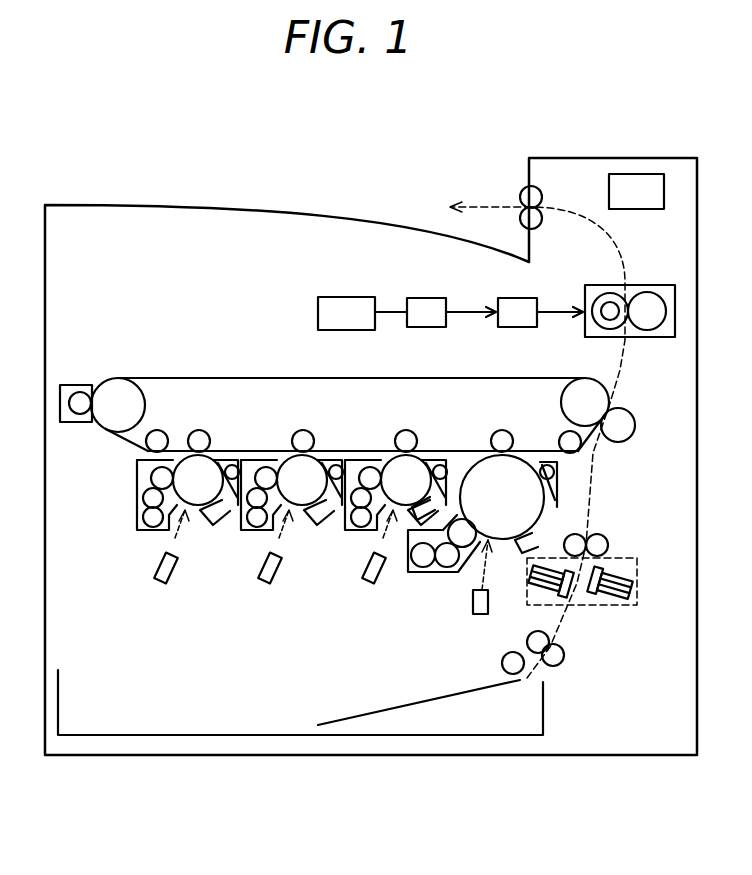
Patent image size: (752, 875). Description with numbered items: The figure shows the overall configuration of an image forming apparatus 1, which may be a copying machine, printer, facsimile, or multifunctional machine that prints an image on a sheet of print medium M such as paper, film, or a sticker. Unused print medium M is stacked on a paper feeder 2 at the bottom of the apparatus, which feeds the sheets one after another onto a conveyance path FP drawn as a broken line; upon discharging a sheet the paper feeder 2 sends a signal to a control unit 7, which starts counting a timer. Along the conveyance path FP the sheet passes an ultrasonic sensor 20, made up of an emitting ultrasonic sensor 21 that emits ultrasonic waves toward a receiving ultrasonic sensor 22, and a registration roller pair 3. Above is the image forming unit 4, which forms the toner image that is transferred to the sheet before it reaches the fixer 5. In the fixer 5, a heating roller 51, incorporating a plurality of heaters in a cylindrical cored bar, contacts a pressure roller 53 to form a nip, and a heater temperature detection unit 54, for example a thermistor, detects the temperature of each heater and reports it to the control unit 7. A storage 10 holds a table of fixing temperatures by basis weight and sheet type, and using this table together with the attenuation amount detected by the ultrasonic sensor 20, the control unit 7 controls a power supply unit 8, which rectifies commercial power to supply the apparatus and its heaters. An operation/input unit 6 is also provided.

The image forming apparatus 1 is at (258, 107).
The paper feeder 2 is at (562, 700).
The registration roller pair 3 is at (614, 530).
The image forming unit 4 is at (198, 348).
The fixer 5 is at (596, 321).
The operation/input unit 6 is at (607, 188).
The control unit 7 is at (428, 298).
The power supply unit 8 is at (520, 298).
The storage 10 is at (350, 297).
The ultrasonic sensor 20 is at (593, 581).
The emitting ultrasonic sensor 21 is at (553, 590).
The receiving ultrasonic sensor 22 is at (622, 598).
The heating roller 51 is at (616, 330).
The pressure roller 53 is at (650, 332).
The heater temperature detection unit 54 is at (596, 332).
The conveyance path FP is at (592, 484).
The print medium M is at (423, 700).